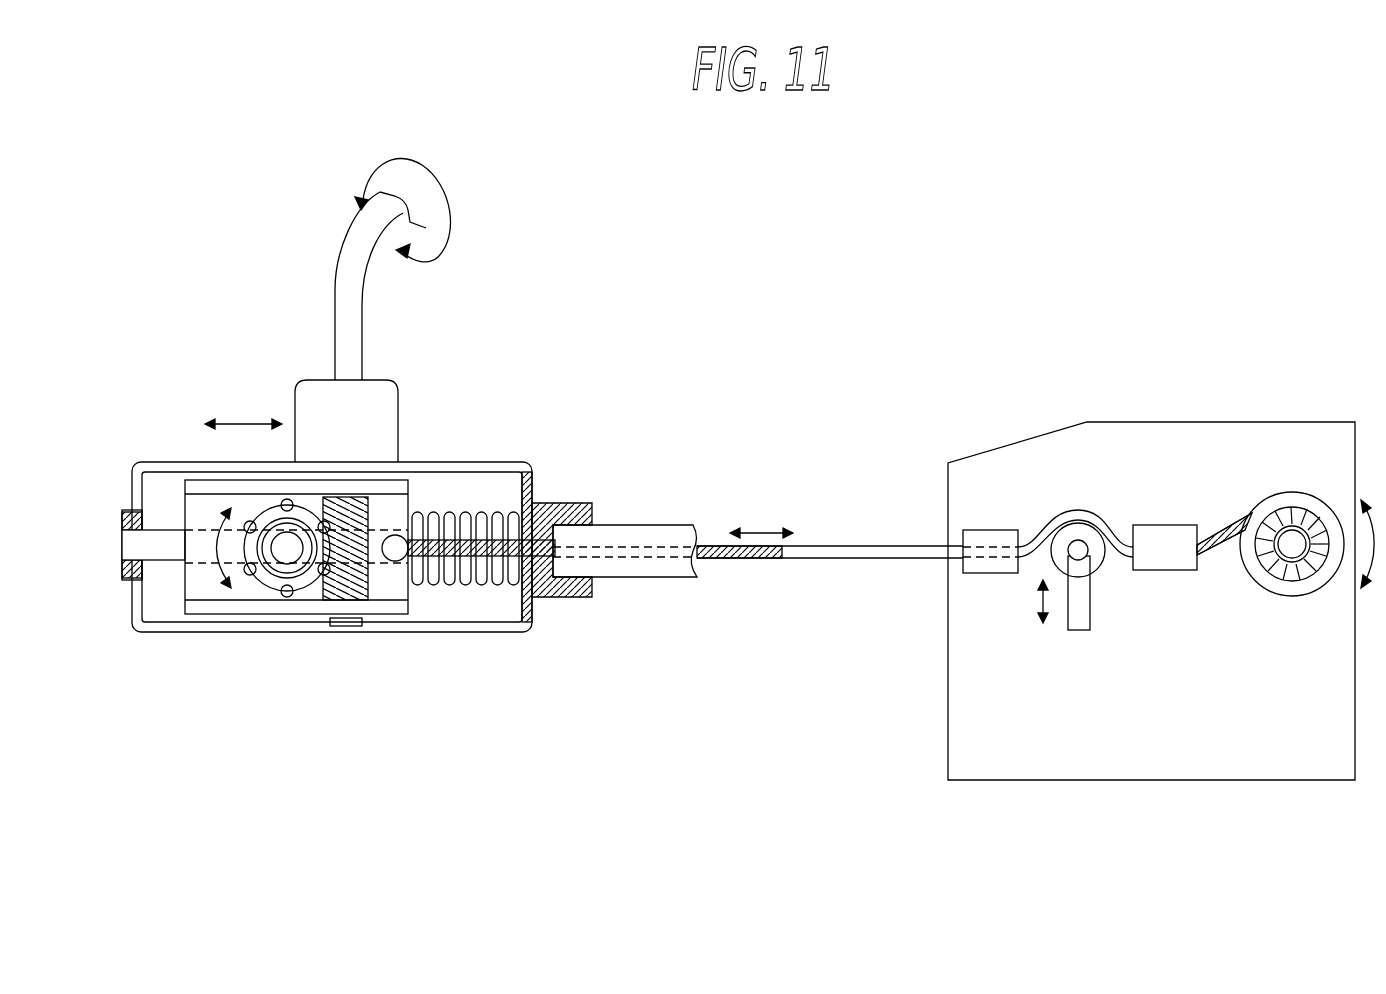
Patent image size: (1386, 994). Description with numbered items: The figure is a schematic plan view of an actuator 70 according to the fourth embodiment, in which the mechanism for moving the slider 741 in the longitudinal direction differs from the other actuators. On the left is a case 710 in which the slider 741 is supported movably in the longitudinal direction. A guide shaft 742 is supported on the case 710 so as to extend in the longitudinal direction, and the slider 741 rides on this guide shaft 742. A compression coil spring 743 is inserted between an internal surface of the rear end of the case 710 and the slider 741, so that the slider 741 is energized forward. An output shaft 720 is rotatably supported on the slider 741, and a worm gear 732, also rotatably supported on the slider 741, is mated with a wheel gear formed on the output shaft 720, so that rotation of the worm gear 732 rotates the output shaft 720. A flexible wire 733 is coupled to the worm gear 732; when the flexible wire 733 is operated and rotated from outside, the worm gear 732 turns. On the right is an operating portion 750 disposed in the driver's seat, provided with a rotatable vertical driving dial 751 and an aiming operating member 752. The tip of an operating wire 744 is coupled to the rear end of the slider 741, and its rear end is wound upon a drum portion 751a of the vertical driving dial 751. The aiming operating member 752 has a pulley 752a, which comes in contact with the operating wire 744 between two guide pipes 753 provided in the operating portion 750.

The actuator 70 is at (458, 352).
The case 710 is at (160, 462).
The output shaft 720 is at (265, 505).
The worm gear 732 is at (366, 577).
The flexible wire 733 is at (357, 262).
The slider 741 is at (400, 588).
The guide shaft 742 is at (490, 568).
The compression coil spring 743 is at (470, 517).
The operating wire 744 is at (537, 548).
The operating portion 750 is at (1173, 453).
The vertical driving dial 751 is at (1293, 492).
The drum portion 751a is at (1283, 573).
The aiming operating member 752 is at (1087, 555).
The pulley 752a is at (1079, 523).
The guide pipe 753 is at (990, 573).